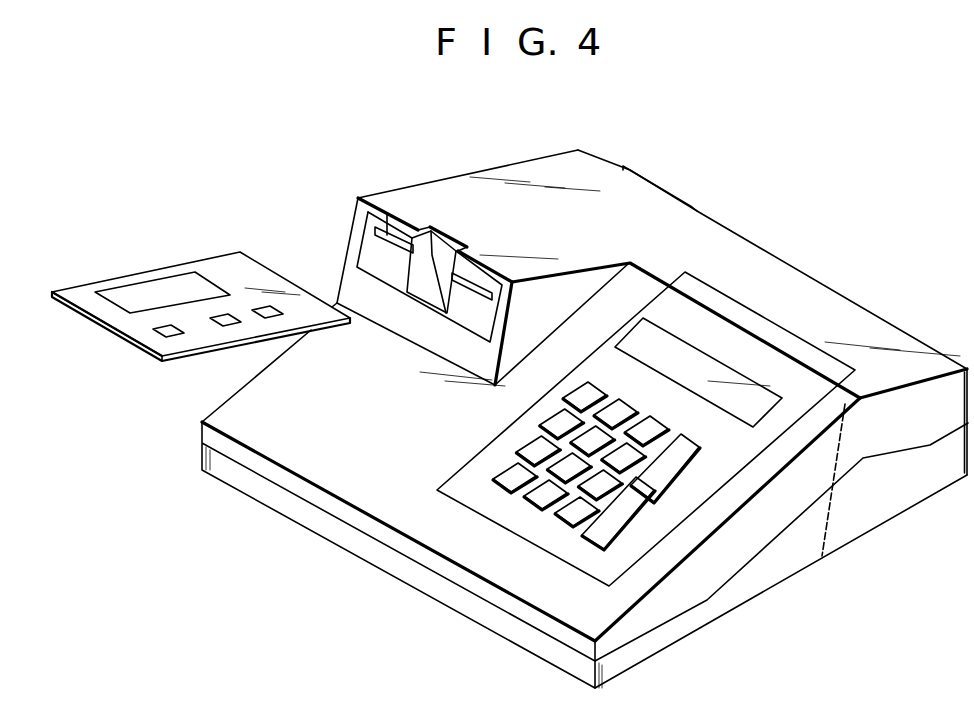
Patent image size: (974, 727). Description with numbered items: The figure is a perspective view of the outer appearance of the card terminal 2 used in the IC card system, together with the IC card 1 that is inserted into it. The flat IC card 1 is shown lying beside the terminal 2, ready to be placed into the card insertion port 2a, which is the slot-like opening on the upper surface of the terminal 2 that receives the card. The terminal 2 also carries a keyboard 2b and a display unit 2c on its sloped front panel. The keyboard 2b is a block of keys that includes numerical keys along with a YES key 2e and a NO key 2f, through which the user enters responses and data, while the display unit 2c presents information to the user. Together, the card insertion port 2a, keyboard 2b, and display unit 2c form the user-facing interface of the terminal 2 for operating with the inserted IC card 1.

The IC card 1 is at (210, 267).
The terminal 2 is at (594, 166).
The card insertion port 2a is at (386, 212).
The keyboard 2b is at (646, 438).
The display unit 2c is at (733, 378).
The YES key 2e is at (592, 530).
The NO key 2f is at (690, 446).